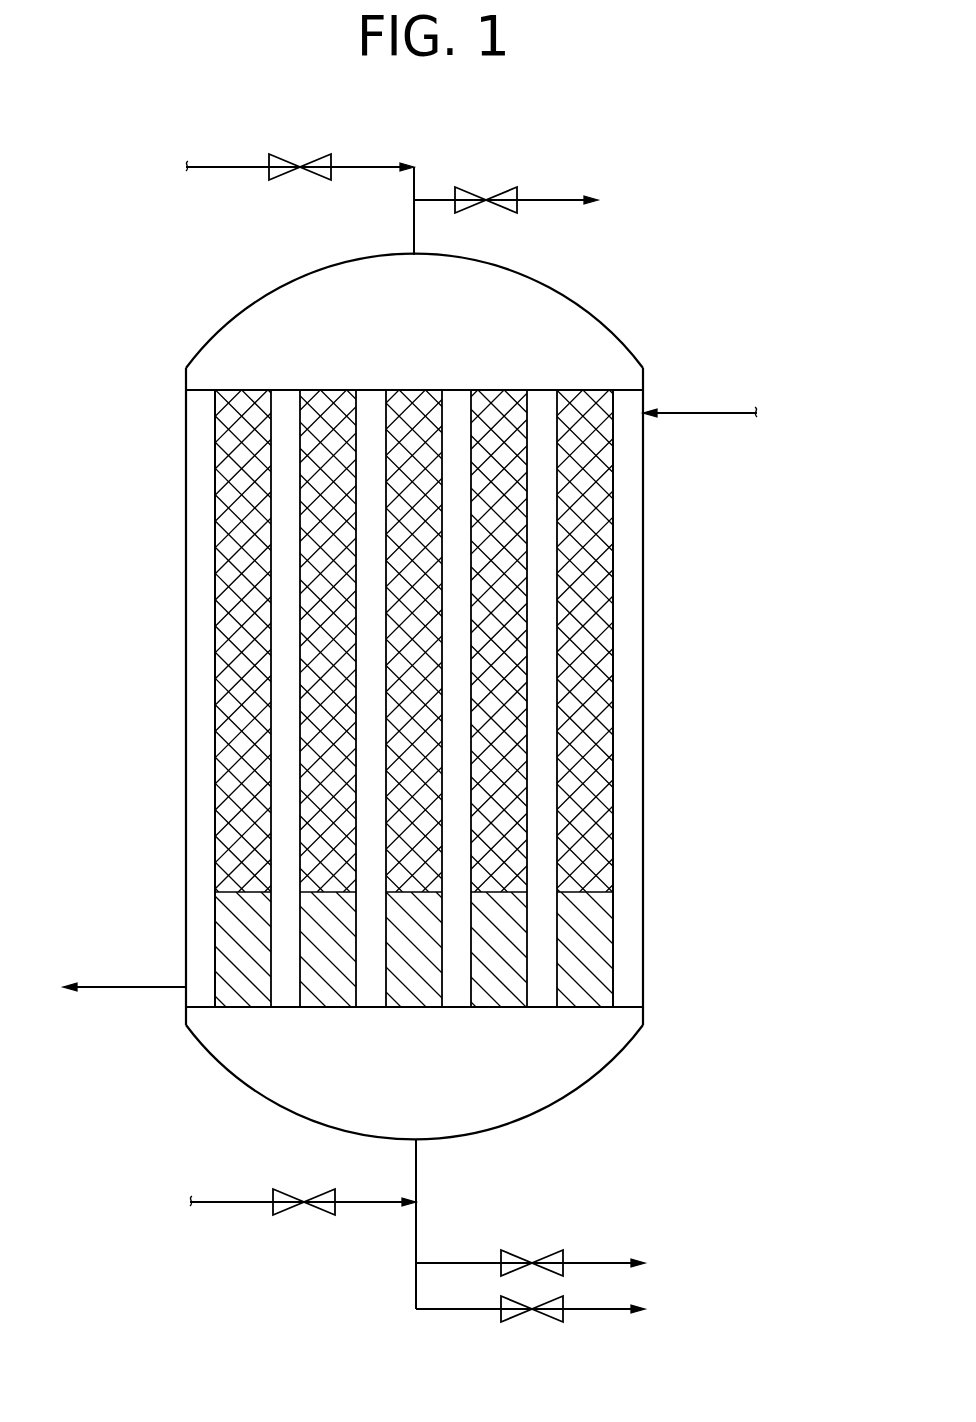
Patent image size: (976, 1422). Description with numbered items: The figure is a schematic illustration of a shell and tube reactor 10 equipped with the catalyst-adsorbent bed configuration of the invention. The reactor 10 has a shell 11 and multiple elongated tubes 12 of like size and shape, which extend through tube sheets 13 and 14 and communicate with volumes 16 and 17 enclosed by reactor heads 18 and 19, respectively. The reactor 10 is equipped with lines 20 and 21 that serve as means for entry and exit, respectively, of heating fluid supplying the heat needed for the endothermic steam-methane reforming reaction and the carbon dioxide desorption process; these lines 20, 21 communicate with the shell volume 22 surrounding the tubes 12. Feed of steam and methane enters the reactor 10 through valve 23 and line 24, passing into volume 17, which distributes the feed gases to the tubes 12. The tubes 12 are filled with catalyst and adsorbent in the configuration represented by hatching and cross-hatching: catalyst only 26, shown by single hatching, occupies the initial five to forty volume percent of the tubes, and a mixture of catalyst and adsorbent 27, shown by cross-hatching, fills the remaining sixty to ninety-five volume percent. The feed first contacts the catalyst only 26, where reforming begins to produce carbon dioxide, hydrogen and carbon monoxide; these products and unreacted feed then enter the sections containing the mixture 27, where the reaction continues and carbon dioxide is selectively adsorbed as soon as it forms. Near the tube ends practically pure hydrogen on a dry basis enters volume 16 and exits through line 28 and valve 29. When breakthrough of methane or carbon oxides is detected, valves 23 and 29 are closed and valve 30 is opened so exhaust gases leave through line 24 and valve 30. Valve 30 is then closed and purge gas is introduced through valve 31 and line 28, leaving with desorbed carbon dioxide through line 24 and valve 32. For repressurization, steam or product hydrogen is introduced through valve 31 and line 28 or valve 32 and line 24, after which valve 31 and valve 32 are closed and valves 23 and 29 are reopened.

The reactor 10 is at (417, 697).
The shell 11 is at (643, 568).
The elongated tubes 12 is at (215, 561).
The tube sheet 13 is at (285, 390).
The tube sheet 14 is at (372, 1007).
The volume 16 is at (450, 310).
The volume 17 is at (481, 1083).
The reactor head 18 is at (578, 304).
The reactor head 19 is at (604, 1068).
The line 20 is at (718, 413).
The line 21 is at (125, 987).
The shell volume 22 is at (286, 726).
The valve 23 is at (304, 1202).
The line 24 is at (420, 1163).
The catalyst only 26 is at (598, 962).
The mixture of catalyst and adsorbent 27 is at (596, 810).
The line 28 is at (414, 228).
The valve 29 is at (486, 200).
The valve 30 is at (532, 1263).
The valve 31 is at (300, 167).
The valve 32 is at (532, 1309).